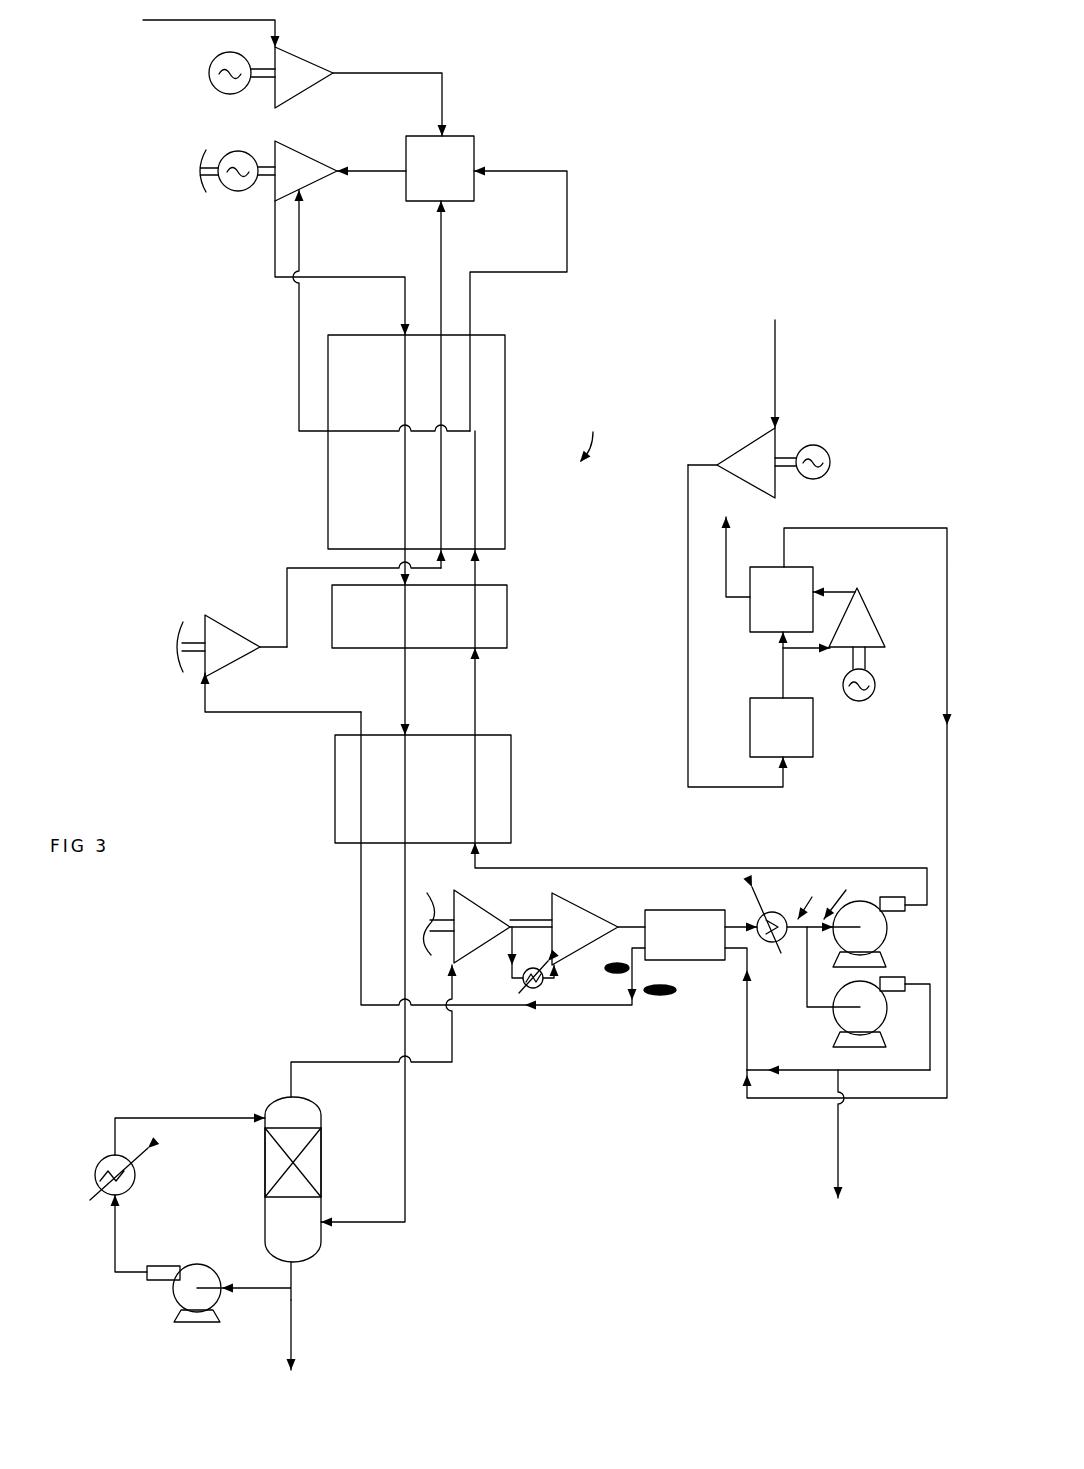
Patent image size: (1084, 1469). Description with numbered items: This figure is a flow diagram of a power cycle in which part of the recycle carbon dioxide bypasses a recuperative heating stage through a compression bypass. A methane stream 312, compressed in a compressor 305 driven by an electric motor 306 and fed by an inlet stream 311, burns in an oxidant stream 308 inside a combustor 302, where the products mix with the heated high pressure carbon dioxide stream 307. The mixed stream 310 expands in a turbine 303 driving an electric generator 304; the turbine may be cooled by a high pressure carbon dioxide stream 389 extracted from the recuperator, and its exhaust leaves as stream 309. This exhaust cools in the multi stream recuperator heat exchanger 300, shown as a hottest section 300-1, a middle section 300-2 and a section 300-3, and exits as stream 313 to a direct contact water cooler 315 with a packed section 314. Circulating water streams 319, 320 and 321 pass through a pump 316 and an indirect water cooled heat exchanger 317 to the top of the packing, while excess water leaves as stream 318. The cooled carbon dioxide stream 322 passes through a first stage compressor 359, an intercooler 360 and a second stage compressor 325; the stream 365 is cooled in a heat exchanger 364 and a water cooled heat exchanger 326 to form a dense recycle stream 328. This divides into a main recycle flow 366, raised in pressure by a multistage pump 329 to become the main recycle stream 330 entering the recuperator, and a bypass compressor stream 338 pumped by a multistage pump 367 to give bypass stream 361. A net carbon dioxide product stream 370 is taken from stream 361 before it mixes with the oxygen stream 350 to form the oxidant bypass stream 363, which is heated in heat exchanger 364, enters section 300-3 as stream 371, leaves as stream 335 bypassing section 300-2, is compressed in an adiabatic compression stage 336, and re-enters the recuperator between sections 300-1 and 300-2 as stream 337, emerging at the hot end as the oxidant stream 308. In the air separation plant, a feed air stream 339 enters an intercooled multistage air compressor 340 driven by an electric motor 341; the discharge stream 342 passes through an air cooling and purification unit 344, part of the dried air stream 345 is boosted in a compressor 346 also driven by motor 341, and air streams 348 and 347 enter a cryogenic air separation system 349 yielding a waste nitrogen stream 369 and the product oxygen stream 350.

The recuperator heat exchanger 300 is at (585, 435).
The first section of recuperator heat exchanger 300-1 is at (416, 442).
The middle section of recuperator heat exchanger 300-2 is at (419, 616).
The third section of recuperator heat exchanger 300-3 is at (423, 789).
The combustor 302 is at (440, 168).
The turbine 303 is at (306, 171).
The electric generator 304 is at (237, 163).
The compressor 305 is at (304, 77).
The electric motor 306 is at (220, 73).
The high pressure carbon dioxide stream 307 is at (539, 299).
The oxidant stream 308 is at (458, 384).
The turbine exhaust stream 309 is at (342, 468).
The mixed stream 310 is at (371, 162).
The fresh gas feed 311 is at (211, 23).
The methane stream 312 is at (390, 96).
The cooled turbine exhaust stream 313 is at (384, 981).
The packed section 314 is at (293, 1162).
The direct contact water cooler 315 is at (293, 1179).
The pump 316 is at (184, 1282).
The indirect water cooled heat exchanger 317 is at (134, 1168).
The excess liquid water stream 318 is at (312, 1335).
The water stream 319 is at (275, 1281).
The water stream 320 is at (139, 1233).
The water stream 321 is at (190, 1126).
The cooled carbon dioxide stream 322 is at (374, 1031).
The second stage compressor 325 is at (585, 929).
The water cooled heat exchanger 326 is at (779, 914).
The recycle carbon dioxide stream 328 is at (816, 898).
The multistage pump 329 is at (878, 932).
The main recycle carbon dioxide stream 330 is at (699, 668).
The bypass stream 335 is at (281, 692).
The adiabatic compression stage 336 is at (232, 646).
The compressed bypass stream 337 is at (345, 604).
The bypass compressor carbon dioxide stream 338 is at (825, 967).
The feed air stream 339 is at (793, 374).
The intercooled multistage air compressor 340 is at (731, 463).
The electric motor 341 is at (844, 573).
The discharge stream 342 is at (717, 626).
The air cooling and purification unit 344 is at (781, 727).
The air stream 345 is at (807, 657).
The compressor 346 is at (857, 618).
The air stream 347 is at (834, 584).
The air stream 348 is at (762, 664).
The air separation cryogenic system 349 is at (781, 599).
The oxygen stream 350 is at (847, 803).
The first stage compressor 359 is at (487, 926).
The intercooler 360 is at (550, 960).
The bypass stream 361 is at (838, 1062).
The oxidant bypass stream 363 is at (731, 1009).
The heat exchanger 364 is at (685, 925).
The compressed recycle carbon dioxide stream 365 is at (625, 916).
The main recycle carbon dioxide flow 366 is at (850, 899).
The multistage pump 367 is at (881, 1023).
The waste nitrogen stream 369 is at (743, 557).
The net carbon dioxide product stream 370 is at (859, 1134).
The heated oxidant bypass stream 371 is at (482, 861).
The cooling high pressure carbon dioxide stream 389 is at (359, 310).